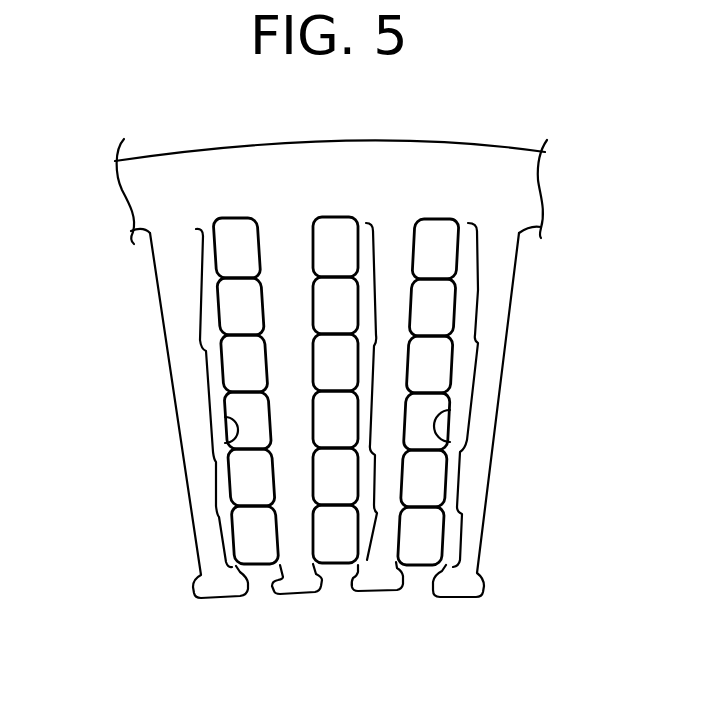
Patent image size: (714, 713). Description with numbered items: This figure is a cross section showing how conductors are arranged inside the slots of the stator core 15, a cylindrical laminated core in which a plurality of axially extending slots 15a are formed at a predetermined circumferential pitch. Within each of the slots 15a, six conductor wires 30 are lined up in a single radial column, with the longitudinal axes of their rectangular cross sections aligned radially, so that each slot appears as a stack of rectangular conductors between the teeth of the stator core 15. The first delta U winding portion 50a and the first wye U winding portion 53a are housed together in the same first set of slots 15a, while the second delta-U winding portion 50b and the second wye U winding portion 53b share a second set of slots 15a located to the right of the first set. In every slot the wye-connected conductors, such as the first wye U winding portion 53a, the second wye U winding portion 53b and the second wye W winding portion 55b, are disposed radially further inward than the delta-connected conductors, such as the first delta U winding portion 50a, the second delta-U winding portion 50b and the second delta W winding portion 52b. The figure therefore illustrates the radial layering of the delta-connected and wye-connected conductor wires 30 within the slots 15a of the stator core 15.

The stator core 15 is at (447, 166).
The slots 15a is at (220, 446).
The conductor wires 30 is at (230, 250).
The first delta U winding portion 50a is at (386, 336).
The second delta-U winding portion 50b is at (487, 343).
The second delta W winding portion 52b is at (199, 341).
The first wye U winding portion 53a is at (378, 513).
The second wye U winding portion 53b is at (473, 509).
The second wye W winding portion 55b is at (201, 516).